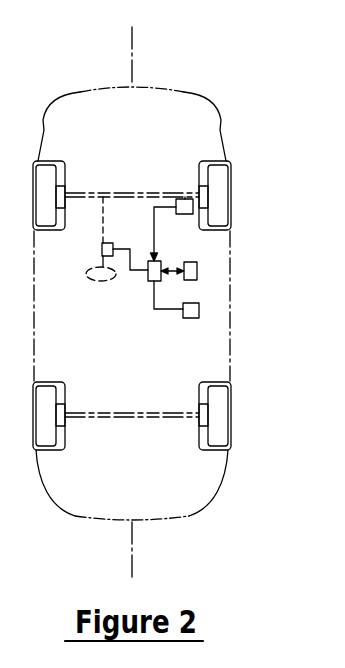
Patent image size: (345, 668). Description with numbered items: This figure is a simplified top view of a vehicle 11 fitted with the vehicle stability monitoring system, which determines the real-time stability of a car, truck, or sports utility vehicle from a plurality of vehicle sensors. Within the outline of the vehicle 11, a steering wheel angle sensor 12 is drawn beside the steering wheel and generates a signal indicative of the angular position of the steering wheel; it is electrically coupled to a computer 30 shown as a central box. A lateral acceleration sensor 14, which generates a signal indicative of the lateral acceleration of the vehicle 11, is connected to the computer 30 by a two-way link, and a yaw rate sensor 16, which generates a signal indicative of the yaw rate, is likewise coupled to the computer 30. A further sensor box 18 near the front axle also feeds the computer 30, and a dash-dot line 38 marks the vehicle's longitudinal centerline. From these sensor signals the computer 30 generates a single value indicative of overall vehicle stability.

The vehicle 11 is at (230, 288).
The steering wheel angle sensor 12 is at (102, 249).
The lateral acceleration sensor 14 is at (197, 270).
The yaw rate sensor 16 is at (199, 309).
The wheel speed sensor 18 is at (183, 199).
The computer 30 is at (148, 276).
The vehicle longitudinal axis 38 is at (132, 566).